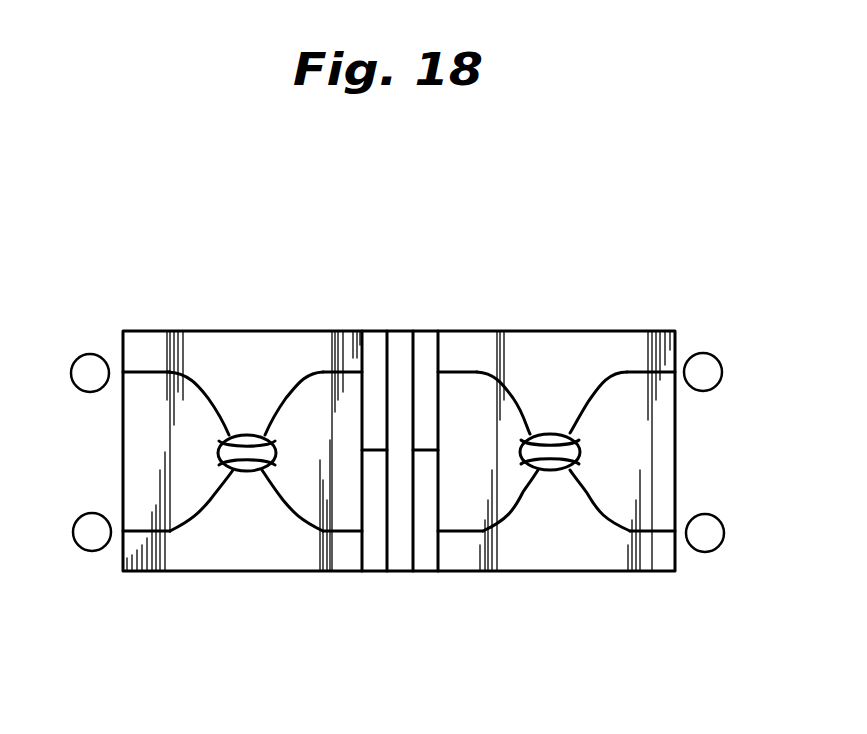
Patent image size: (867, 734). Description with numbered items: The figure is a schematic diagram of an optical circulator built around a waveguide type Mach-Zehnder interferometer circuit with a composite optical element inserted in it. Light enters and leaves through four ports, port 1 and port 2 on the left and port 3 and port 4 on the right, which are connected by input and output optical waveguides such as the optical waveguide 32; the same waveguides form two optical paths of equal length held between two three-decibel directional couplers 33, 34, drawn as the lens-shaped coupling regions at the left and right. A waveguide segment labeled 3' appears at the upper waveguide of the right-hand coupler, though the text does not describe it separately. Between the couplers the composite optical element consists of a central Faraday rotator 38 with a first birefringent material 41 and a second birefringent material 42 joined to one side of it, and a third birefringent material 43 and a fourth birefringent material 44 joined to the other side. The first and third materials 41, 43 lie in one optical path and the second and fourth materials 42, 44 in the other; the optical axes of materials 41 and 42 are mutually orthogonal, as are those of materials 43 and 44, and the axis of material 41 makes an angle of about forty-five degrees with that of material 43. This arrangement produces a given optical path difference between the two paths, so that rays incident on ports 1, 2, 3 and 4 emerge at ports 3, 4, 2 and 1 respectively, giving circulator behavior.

The port 1 is at (90, 373).
The port 2 is at (92, 532).
The port 3 is at (703, 372).
The port 4 is at (705, 533).
The optical waveguide 3' is at (520, 338).
The optical waveguide 32 is at (323, 531).
The 3-dB directional coupler 33 is at (243, 437).
The 3-dB directional coupler 34 is at (550, 435).
The Faraday rotator 38 is at (400, 350).
The first birefringent material 41 is at (320, 370).
The second birefringent material 42 is at (378, 558).
The third birefringent material 43 is at (427, 345).
The fourth birefringent material 44 is at (432, 557).